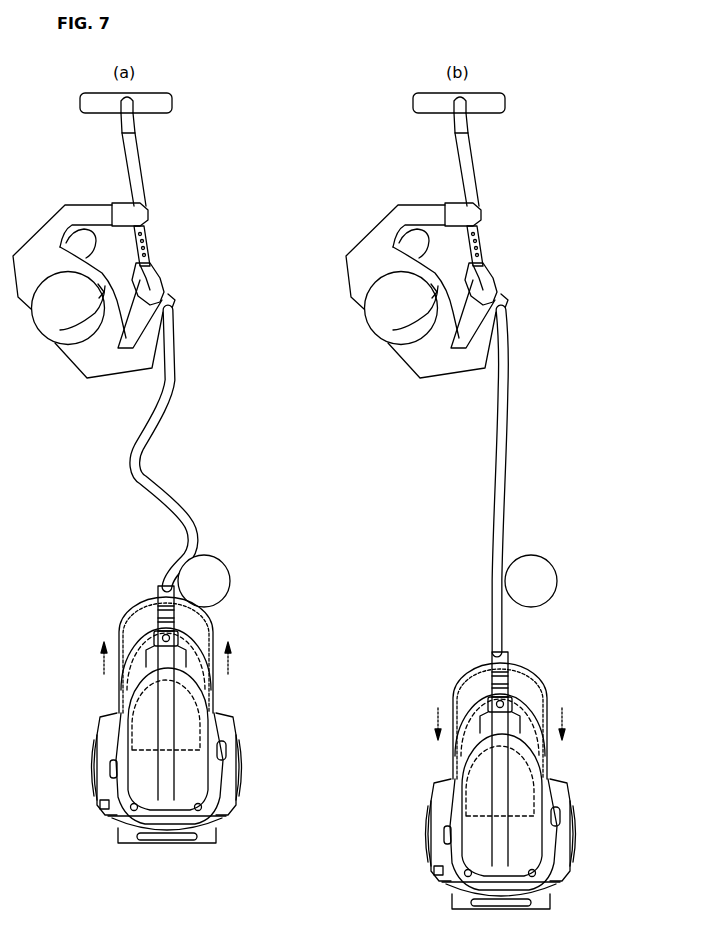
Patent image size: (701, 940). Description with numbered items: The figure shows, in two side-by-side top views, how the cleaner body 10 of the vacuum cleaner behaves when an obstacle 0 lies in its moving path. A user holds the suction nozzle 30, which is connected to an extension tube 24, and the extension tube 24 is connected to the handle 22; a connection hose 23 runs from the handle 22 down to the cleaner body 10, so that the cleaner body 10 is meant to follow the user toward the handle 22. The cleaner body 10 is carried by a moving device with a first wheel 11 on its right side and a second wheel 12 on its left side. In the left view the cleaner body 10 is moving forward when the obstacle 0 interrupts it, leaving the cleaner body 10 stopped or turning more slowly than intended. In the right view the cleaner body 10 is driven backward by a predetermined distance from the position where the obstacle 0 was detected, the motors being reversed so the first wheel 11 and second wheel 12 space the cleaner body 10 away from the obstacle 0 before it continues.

The suction nozzle 30 is at (173, 103).
The extension tube 24 is at (141, 168).
The handle 22 is at (152, 260).
The connection hose 23 is at (176, 383).
The obstacle 0 is at (231, 581).
The cleaner body 10 is at (195, 782).
The first wheel 11 is at (238, 770).
The second wheel 12 is at (97, 772).